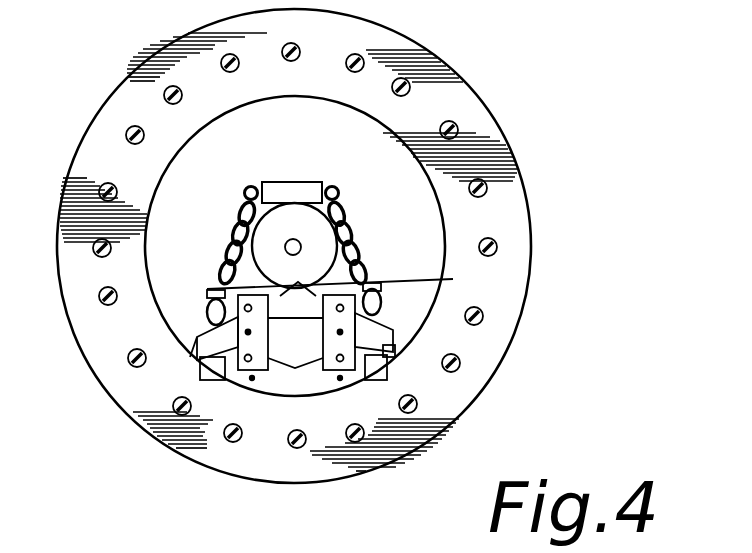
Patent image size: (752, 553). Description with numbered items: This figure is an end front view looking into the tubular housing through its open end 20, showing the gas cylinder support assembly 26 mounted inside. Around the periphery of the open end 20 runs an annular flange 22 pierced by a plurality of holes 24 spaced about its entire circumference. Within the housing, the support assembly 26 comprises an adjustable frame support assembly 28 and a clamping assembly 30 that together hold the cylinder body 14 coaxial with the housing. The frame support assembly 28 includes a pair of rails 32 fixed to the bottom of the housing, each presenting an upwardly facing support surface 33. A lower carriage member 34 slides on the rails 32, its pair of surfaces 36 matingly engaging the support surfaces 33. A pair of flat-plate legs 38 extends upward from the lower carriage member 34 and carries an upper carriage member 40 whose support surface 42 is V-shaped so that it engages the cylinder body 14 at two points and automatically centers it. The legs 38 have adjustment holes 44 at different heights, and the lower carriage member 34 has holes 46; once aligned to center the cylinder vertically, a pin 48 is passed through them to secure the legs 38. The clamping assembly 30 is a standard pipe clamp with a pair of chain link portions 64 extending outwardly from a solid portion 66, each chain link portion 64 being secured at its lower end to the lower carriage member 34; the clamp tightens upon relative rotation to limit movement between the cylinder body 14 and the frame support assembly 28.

The cylinder body 14 is at (307, 222).
The open end 20 is at (430, 196).
The annular flange 22 is at (494, 145).
The holes 24 is at (167, 93).
The gas cylinder support assembly 26 is at (190, 357).
The adjustable frame support assembly 28 is at (347, 281).
The clamping assembly 30 is at (366, 230).
The rails 32 is at (143, 423).
The support surface 33 is at (203, 373).
The lower carriage member 34 is at (395, 351).
The surfaces 36 is at (195, 365).
The legs 38 is at (294, 264).
The upper carriage member 40 is at (383, 297).
The support surface 42 is at (207, 283).
The adjustment holes 44 is at (270, 352).
The holes 46 is at (253, 381).
The pin 48 is at (196, 332).
The chain link portions 64 is at (366, 250).
The solid portion 66 is at (290, 182).